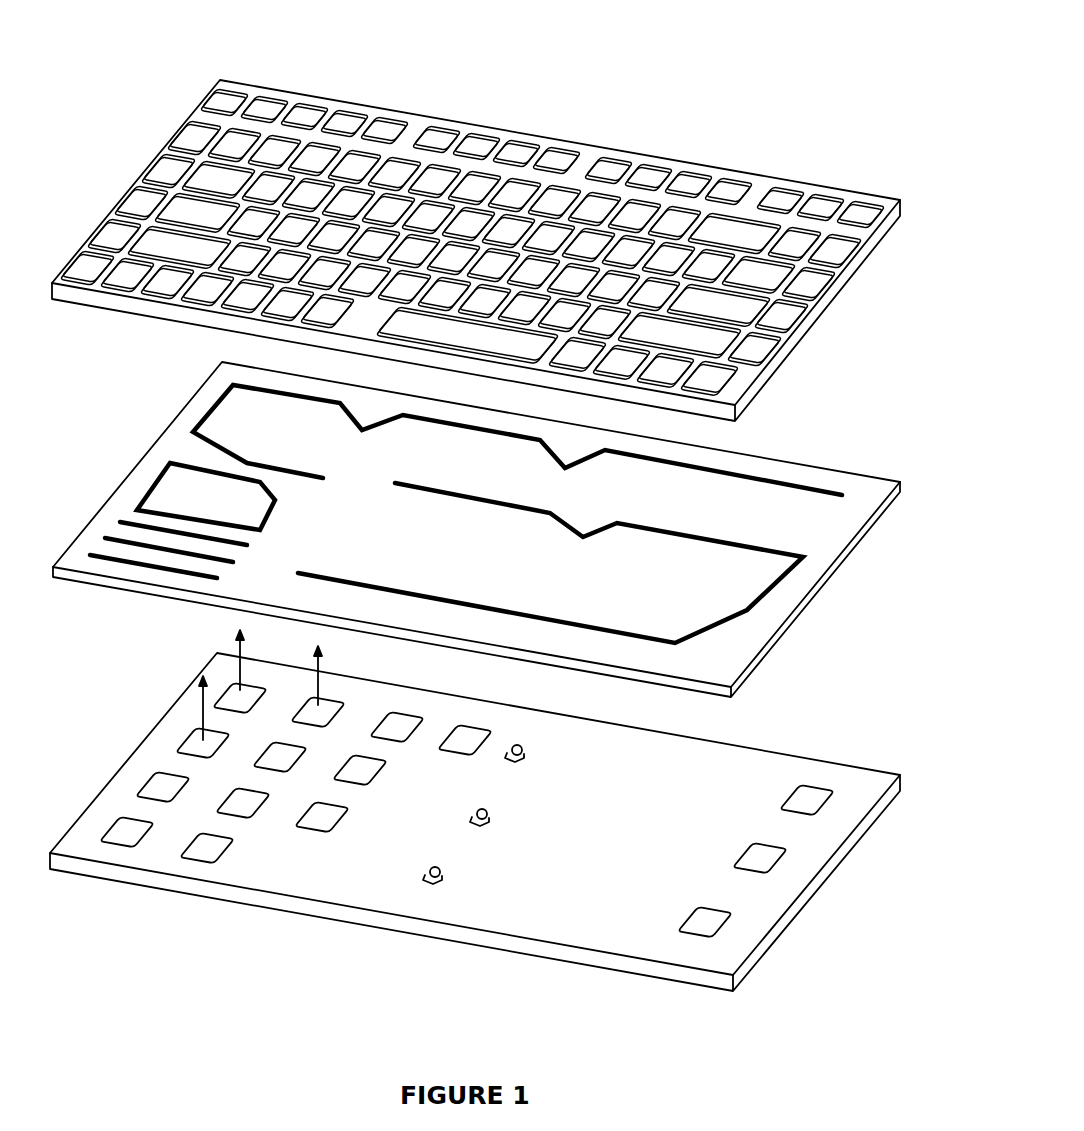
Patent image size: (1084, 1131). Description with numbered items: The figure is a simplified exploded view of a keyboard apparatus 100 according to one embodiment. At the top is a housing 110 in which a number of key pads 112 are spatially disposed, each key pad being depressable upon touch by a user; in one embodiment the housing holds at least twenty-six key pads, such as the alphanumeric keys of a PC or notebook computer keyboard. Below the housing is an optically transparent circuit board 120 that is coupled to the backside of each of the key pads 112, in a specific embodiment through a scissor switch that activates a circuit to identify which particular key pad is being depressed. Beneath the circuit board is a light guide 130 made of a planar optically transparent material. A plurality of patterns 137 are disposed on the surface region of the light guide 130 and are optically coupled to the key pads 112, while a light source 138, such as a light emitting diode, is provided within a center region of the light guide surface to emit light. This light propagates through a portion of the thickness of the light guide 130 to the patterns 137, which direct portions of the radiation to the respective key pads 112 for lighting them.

The keyboard apparatus 100 is at (765, 104).
The housing 110 is at (822, 300).
The key pads 112 is at (393, 158).
The optically transparent circuit board 120 is at (826, 574).
The light guide 130 is at (823, 872).
The patterns 137 is at (198, 864).
The light source 138 is at (493, 806).